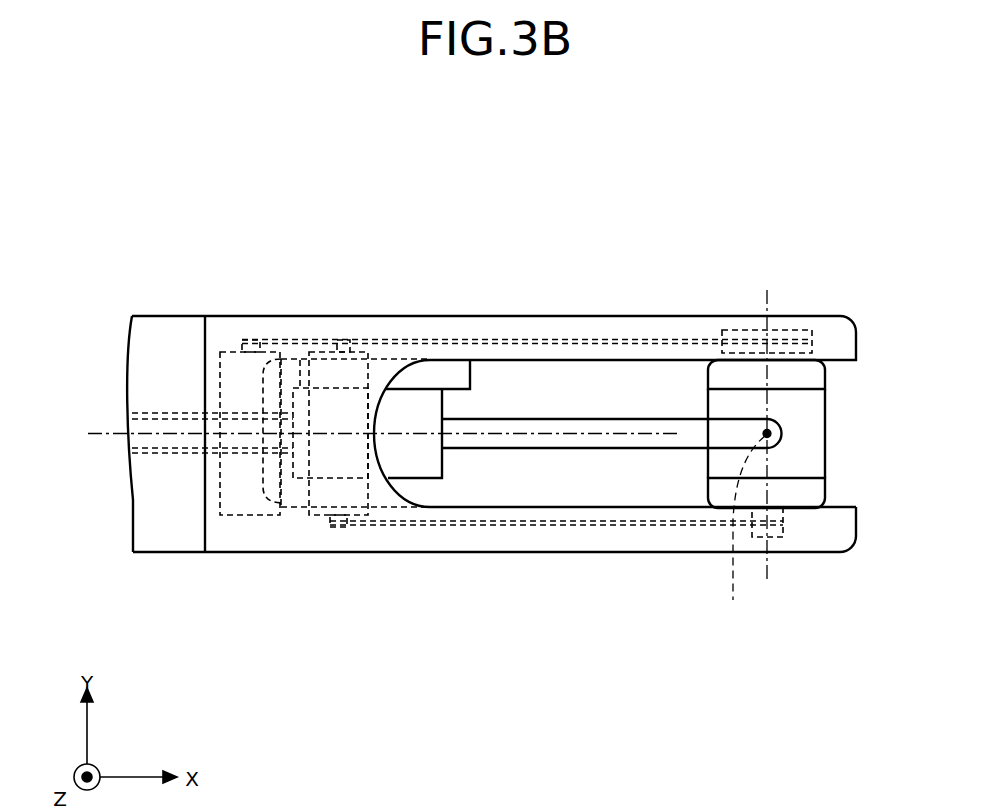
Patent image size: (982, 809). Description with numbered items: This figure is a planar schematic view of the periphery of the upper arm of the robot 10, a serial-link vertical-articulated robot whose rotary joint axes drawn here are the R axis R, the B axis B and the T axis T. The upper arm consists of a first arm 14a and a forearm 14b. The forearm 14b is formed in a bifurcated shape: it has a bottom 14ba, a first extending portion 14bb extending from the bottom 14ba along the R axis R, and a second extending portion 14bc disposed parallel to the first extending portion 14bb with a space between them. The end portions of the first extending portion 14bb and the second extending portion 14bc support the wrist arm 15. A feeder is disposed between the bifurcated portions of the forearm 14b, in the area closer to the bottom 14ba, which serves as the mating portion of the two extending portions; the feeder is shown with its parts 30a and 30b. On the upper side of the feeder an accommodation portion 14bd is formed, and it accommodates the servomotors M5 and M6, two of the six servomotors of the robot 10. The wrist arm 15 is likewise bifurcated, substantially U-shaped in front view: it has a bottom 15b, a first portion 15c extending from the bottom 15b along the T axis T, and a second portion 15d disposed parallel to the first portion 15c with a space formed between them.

The robot 10 is at (211, 188).
The first arm 14a is at (180, 552).
The forearm 14b is at (548, 625).
The bottom 14ba is at (283, 503).
The first extending portion 14bb is at (442, 538).
The second extending portion 14bc is at (505, 353).
The accommodation portion 14bd is at (383, 494).
The servomotor M5 is at (237, 338).
The servomotor M6 is at (341, 338).
The rotating body 30a is at (430, 407).
The notch of rotating body 30b is at (427, 378).
The wrist arm 15 is at (879, 336).
The bottom 15b is at (812, 428).
The first portion 15c is at (812, 490).
The second portion 15d is at (812, 375).
The R axis R is at (368, 435).
The B axis B is at (766, 420).
The T axis T is at (743, 534).